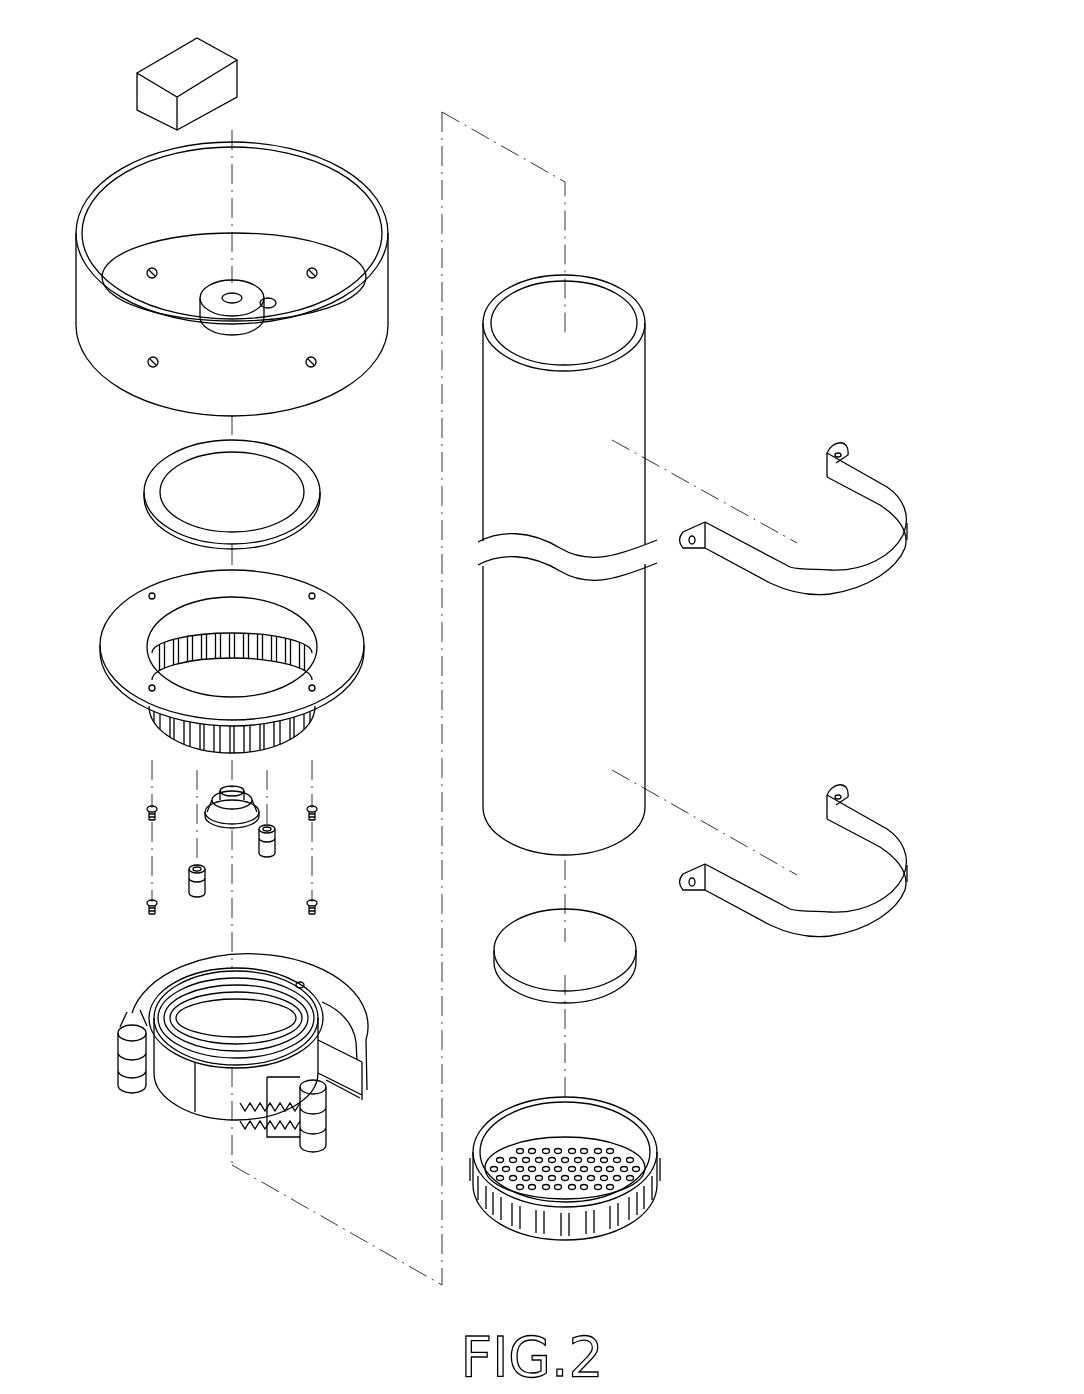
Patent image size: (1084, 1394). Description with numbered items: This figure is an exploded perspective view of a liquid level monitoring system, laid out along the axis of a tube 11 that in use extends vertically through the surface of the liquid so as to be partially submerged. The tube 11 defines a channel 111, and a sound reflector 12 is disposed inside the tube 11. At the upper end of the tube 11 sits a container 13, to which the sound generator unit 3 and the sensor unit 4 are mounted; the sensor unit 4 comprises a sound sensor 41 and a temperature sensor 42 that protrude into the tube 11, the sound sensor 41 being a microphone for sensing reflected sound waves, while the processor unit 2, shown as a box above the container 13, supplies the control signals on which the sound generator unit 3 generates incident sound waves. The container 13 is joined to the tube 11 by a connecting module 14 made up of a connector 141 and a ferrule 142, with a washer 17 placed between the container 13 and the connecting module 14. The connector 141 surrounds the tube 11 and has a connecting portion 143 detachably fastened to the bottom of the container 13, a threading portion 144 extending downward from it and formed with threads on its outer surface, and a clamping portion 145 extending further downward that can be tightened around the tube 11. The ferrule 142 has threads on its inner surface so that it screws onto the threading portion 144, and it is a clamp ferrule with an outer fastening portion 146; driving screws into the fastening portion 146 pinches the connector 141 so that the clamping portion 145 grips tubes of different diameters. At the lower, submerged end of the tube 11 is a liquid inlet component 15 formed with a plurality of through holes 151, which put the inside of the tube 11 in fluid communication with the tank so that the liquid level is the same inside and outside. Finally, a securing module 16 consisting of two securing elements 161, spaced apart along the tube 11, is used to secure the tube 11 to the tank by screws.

The processor unit 2 is at (250, 74).
The sound generator unit 3 is at (249, 842).
The sensor unit 4 is at (203, 881).
The sound sensor 41 is at (274, 838).
The temperature sensor 42 is at (192, 884).
The tube 11 is at (608, 531).
The channel 111 is at (610, 312).
The sound reflector 12 is at (620, 978).
The container 13 is at (317, 155).
The connecting module 14 is at (237, 680).
The connector 141 is at (123, 643).
The ferrule 142 is at (219, 1081).
The connecting portion 143 is at (353, 637).
The threading portion 144 is at (322, 710).
The clamping portion 145 is at (163, 722).
The fastening portion 146 is at (323, 1140).
The liquid inlet component 15 is at (607, 1144).
The through holes 151 is at (596, 1147).
The securing module 16 is at (905, 528).
The securing elements 161 is at (860, 582).
The washer 17 is at (322, 489).